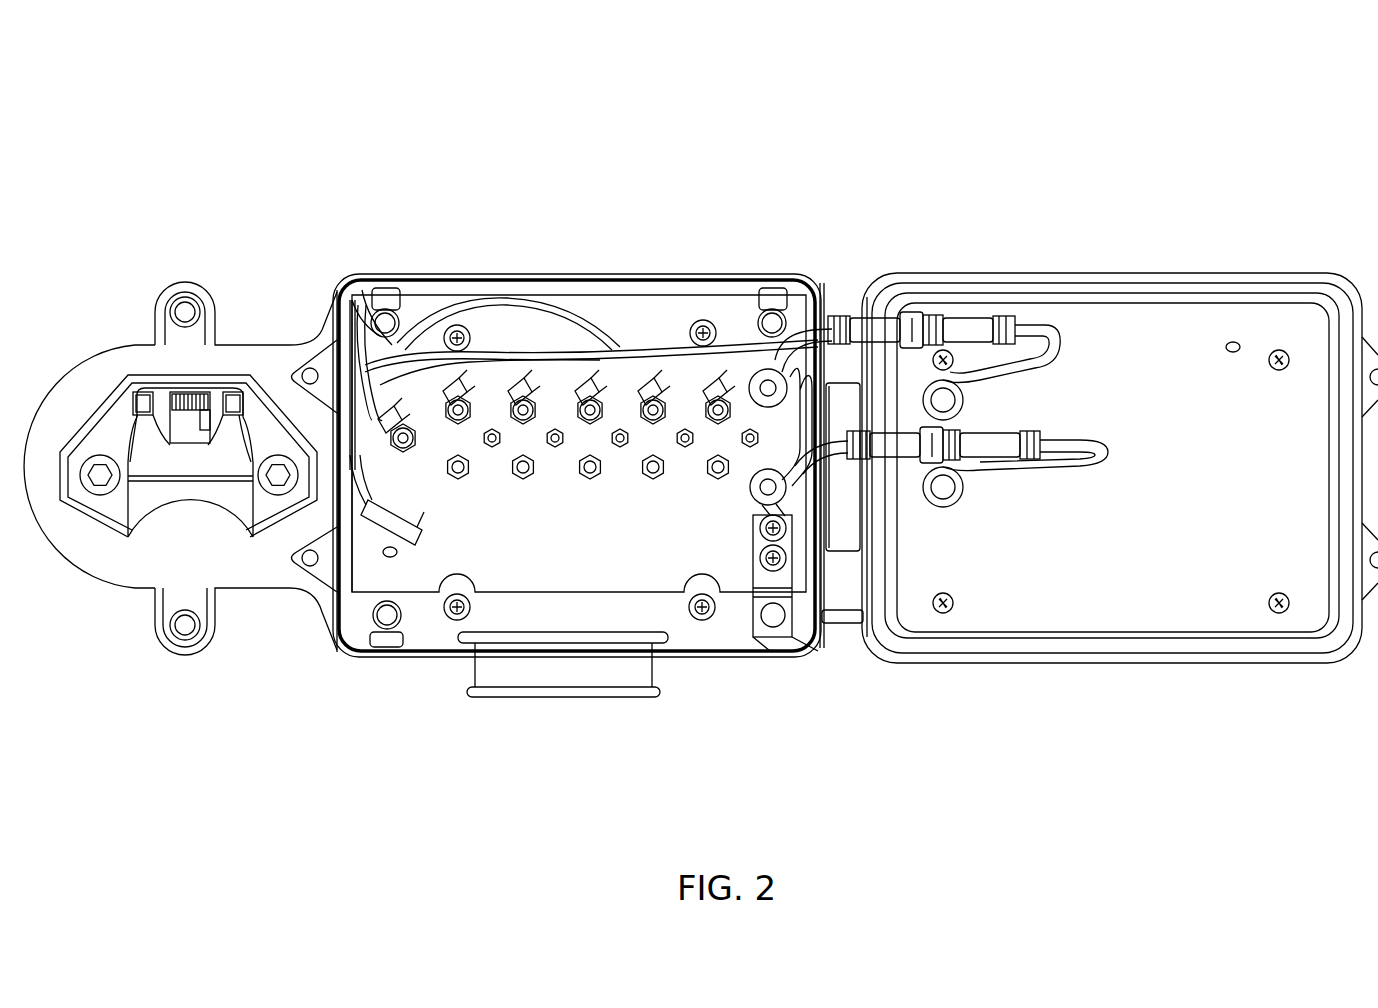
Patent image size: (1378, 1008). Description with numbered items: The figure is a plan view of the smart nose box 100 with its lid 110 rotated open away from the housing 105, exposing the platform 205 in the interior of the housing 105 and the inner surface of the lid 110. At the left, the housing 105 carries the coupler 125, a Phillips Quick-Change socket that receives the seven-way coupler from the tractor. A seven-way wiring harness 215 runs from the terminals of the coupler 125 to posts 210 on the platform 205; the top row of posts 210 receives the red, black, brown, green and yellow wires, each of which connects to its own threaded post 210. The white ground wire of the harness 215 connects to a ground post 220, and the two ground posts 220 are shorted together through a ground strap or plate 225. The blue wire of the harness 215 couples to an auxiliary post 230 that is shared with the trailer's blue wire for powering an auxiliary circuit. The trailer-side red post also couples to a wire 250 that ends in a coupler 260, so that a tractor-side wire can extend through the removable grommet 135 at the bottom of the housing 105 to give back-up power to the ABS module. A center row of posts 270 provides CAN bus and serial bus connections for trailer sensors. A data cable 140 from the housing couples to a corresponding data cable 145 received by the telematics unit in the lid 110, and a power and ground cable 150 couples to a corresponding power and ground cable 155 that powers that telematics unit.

The smart nose box 100 is at (700, 88).
The housing 105 is at (678, 307).
The lid 110 is at (1254, 283).
The J-560 coupler 125 is at (122, 422).
The removable grommet 135 is at (580, 677).
The data cable 140 is at (820, 312).
The data cable 145 is at (1046, 368).
The power and ground cable 150 is at (845, 458).
The power and ground cable 155 is at (1068, 474).
The platform 205 is at (542, 570).
The posts 210 is at (596, 487).
The 7-way wiring harness 215 is at (484, 343).
The ground post 220 is at (752, 514).
The ground strap or plate 225 is at (790, 644).
The auxiliary post 230 is at (372, 450).
The wire 250 is at (566, 305).
The coupler 260 is at (432, 524).
The center row of posts 270 is at (626, 487).